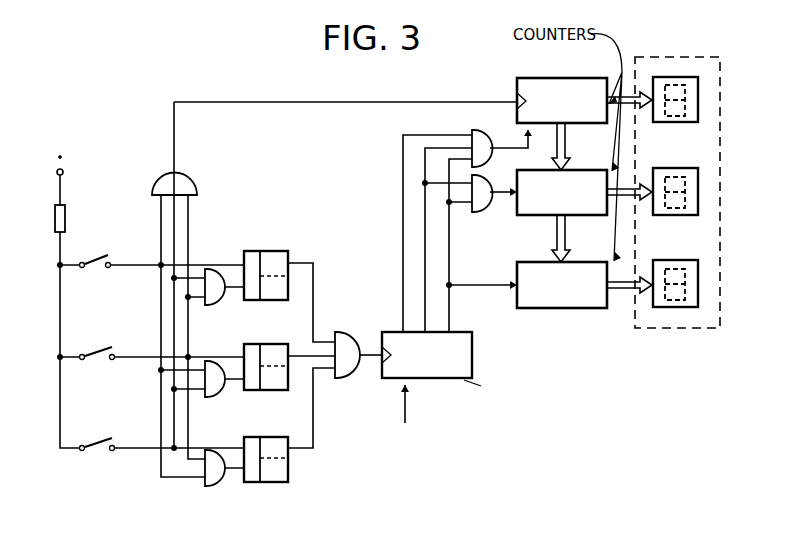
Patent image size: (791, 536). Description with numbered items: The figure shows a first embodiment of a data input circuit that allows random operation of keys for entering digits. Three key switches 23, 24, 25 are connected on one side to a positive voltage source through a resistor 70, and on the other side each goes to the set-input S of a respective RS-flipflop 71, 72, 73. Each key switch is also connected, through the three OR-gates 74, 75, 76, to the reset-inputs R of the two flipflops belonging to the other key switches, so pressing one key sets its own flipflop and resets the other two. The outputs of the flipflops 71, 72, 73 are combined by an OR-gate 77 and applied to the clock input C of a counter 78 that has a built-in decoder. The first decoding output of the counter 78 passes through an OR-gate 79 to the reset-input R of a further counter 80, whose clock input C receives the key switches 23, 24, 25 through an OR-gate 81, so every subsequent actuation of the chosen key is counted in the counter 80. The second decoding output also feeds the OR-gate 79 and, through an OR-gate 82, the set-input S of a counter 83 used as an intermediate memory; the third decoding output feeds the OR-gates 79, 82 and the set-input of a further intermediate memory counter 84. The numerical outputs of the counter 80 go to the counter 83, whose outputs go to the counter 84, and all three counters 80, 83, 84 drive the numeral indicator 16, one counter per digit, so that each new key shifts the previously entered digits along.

The numeral indicator 16 is at (672, 328).
The key switch 23 is at (97, 262).
The key switch 24 is at (100, 354).
The key switch 25 is at (100, 445).
The resistor 70 is at (65, 216).
The RS-flipflop 71 is at (262, 258).
The RS-flipflop 72 is at (274, 356).
The RS-flipflop 73 is at (274, 442).
The OR-gate 74 is at (212, 296).
The OR-gate 75 is at (212, 388).
The OR-gate 76 is at (212, 476).
The OR-gate 77 is at (345, 345).
The counter having a built-in decoder 78 is at (460, 378).
The OR-gate 79 is at (486, 156).
The counter 80 is at (572, 91).
The OR-gate 81 is at (180, 182).
The OR-gate 82 is at (481, 200).
The counter 83 is at (585, 182).
The counter 84 is at (586, 275).